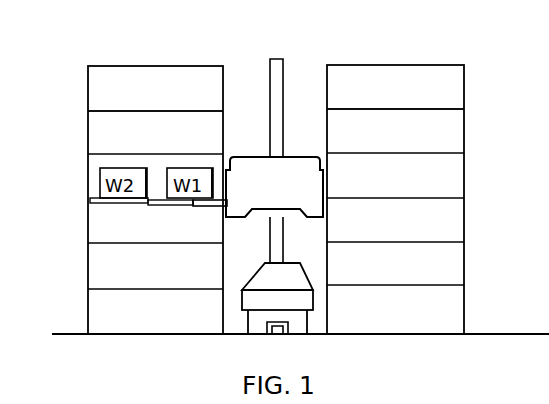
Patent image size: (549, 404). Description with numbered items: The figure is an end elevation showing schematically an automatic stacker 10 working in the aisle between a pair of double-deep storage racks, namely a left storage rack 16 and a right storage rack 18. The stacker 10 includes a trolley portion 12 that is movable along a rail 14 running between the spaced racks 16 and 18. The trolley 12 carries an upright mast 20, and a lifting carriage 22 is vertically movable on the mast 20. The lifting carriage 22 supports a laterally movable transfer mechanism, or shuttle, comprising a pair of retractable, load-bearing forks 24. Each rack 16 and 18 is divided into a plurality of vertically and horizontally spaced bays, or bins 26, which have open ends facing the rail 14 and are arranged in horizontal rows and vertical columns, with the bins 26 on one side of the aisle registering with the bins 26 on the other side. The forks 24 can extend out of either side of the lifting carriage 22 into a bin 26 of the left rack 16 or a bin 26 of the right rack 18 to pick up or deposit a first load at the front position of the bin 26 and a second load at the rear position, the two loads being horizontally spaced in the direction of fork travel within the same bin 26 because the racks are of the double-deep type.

The stacker 10 is at (262, 254).
The trolley portion 12 is at (290, 280).
The rail 14 is at (275, 334).
The left storage rack 16 is at (159, 66).
The right storage rack 18 is at (401, 65).
The mast 20 is at (278, 67).
The lifting carriage 22 is at (293, 157).
The retractable load-bearing forks 24 is at (163, 206).
The bins 26 is at (95, 140).